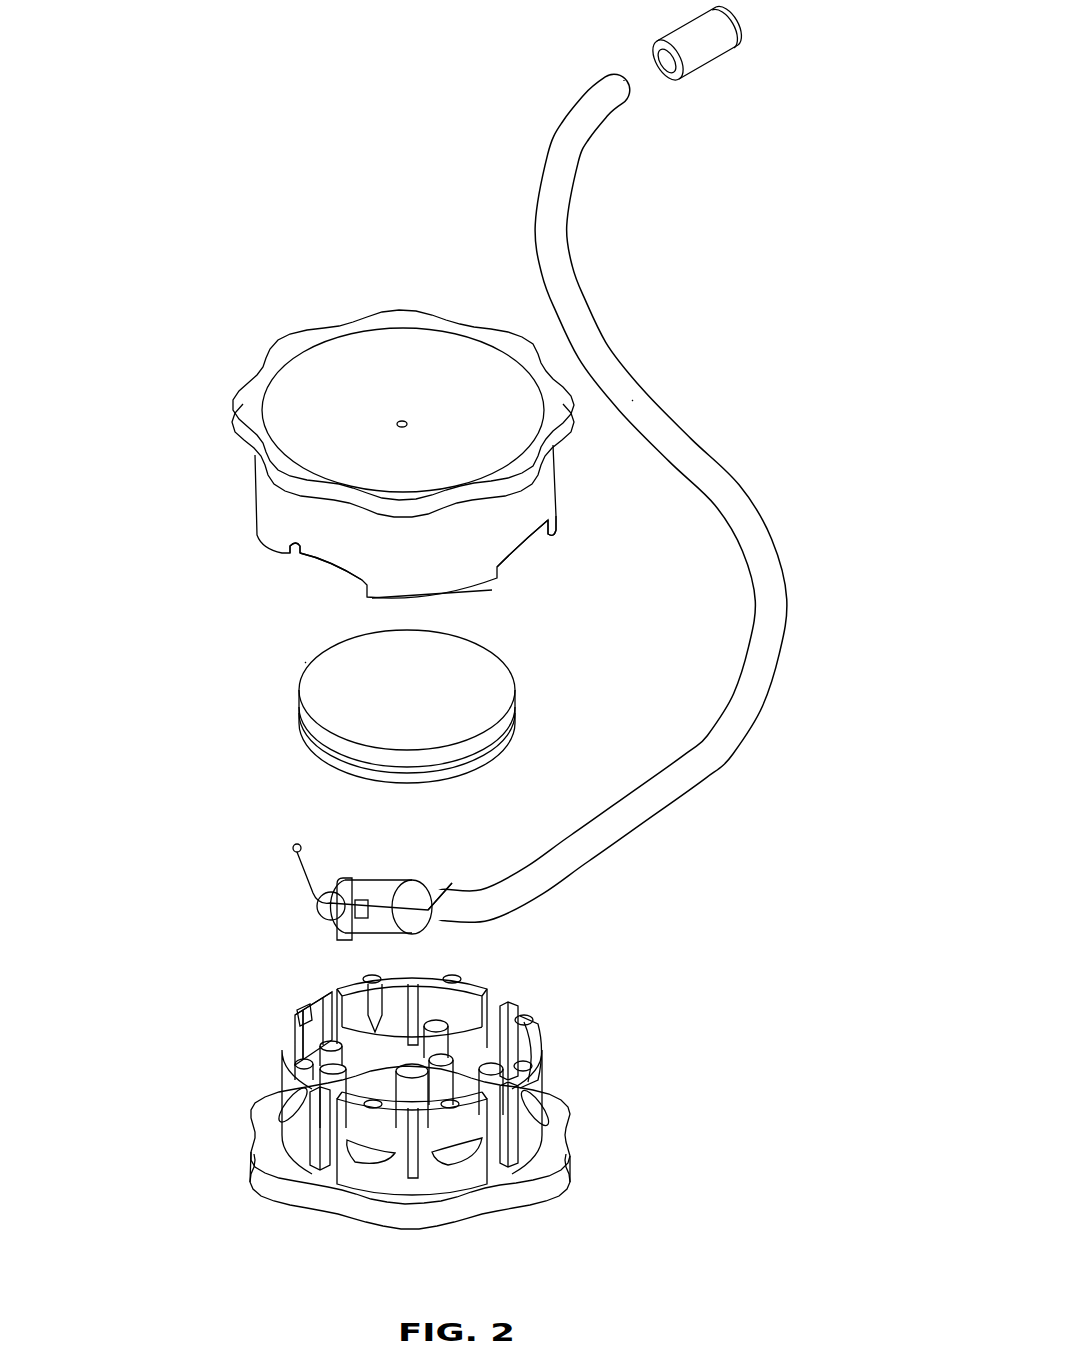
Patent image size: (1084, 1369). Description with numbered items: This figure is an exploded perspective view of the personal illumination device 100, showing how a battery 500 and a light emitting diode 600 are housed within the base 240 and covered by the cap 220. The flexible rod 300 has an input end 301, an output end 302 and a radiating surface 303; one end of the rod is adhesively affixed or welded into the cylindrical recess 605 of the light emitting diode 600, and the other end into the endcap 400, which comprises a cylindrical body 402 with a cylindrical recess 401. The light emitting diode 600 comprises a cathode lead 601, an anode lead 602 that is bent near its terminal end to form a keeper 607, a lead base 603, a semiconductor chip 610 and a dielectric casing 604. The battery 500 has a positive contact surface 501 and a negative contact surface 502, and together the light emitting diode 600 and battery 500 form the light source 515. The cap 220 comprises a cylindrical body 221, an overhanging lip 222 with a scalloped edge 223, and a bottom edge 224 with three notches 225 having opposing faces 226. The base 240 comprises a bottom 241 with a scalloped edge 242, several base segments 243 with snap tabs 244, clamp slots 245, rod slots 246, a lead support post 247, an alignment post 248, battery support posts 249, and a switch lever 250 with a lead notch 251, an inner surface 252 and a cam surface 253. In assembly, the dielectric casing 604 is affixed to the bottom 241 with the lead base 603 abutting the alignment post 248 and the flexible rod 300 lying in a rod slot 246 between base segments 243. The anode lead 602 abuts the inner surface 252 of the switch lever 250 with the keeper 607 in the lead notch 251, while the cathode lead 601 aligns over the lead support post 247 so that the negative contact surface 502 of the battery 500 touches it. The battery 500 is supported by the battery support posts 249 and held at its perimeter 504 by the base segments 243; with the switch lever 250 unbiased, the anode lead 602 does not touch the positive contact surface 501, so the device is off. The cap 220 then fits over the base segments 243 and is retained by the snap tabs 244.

The personal illumination device 100 is at (471, 1122).
The cap 220 is at (394, 468).
The cylindrical body 221 is at (275, 503).
The overhanging lip 222 is at (250, 398).
The scalloped edge 223 is at (238, 434).
The bottom edge 224 is at (425, 585).
The notches 225 is at (330, 577).
The opposing faces 226 is at (288, 561).
The base 240 is at (414, 1122).
The bottom 241 is at (555, 1135).
The scalloped edge 242 is at (568, 1190).
The base segments 243 is at (535, 1080).
The snap tabs 244 is at (548, 1104).
The clamp slots 245 is at (410, 1162).
The rod slots 246 is at (505, 1000).
The lead support post 247 is at (410, 1078).
The alignment post 248 is at (295, 1062).
The battery support posts 249 is at (520, 1047).
The switch lever 250 is at (318, 990).
The lead notch 251 is at (318, 1003).
The inner surface 252 is at (315, 1030).
The cam surface 253 is at (298, 1017).
The flexible rod 300 is at (631, 495).
The input end 301 is at (400, 890).
The output end 302 is at (629, 94).
The radiating surface 303 is at (630, 399).
The endcap 400 is at (710, 64).
The cylindrical recess 401 is at (668, 62).
The cylindrical body 402 is at (710, 45).
The battery 500 is at (374, 706).
The positive contact surface 501 is at (450, 675).
The negative contact surface 502 is at (515, 735).
The perimeter 504 is at (335, 743).
The light source 515 is at (305, 662).
The light emitting diode 600 is at (331, 885).
The cathode lead 601 is at (337, 925).
The anode lead 602 is at (305, 848).
The lead base 603 is at (322, 905).
The dielectric casing 604 is at (385, 882).
The cylindrical recess 605 is at (415, 920).
The keeper 607 is at (293, 850).
The semiconductor chip 610 is at (365, 920).